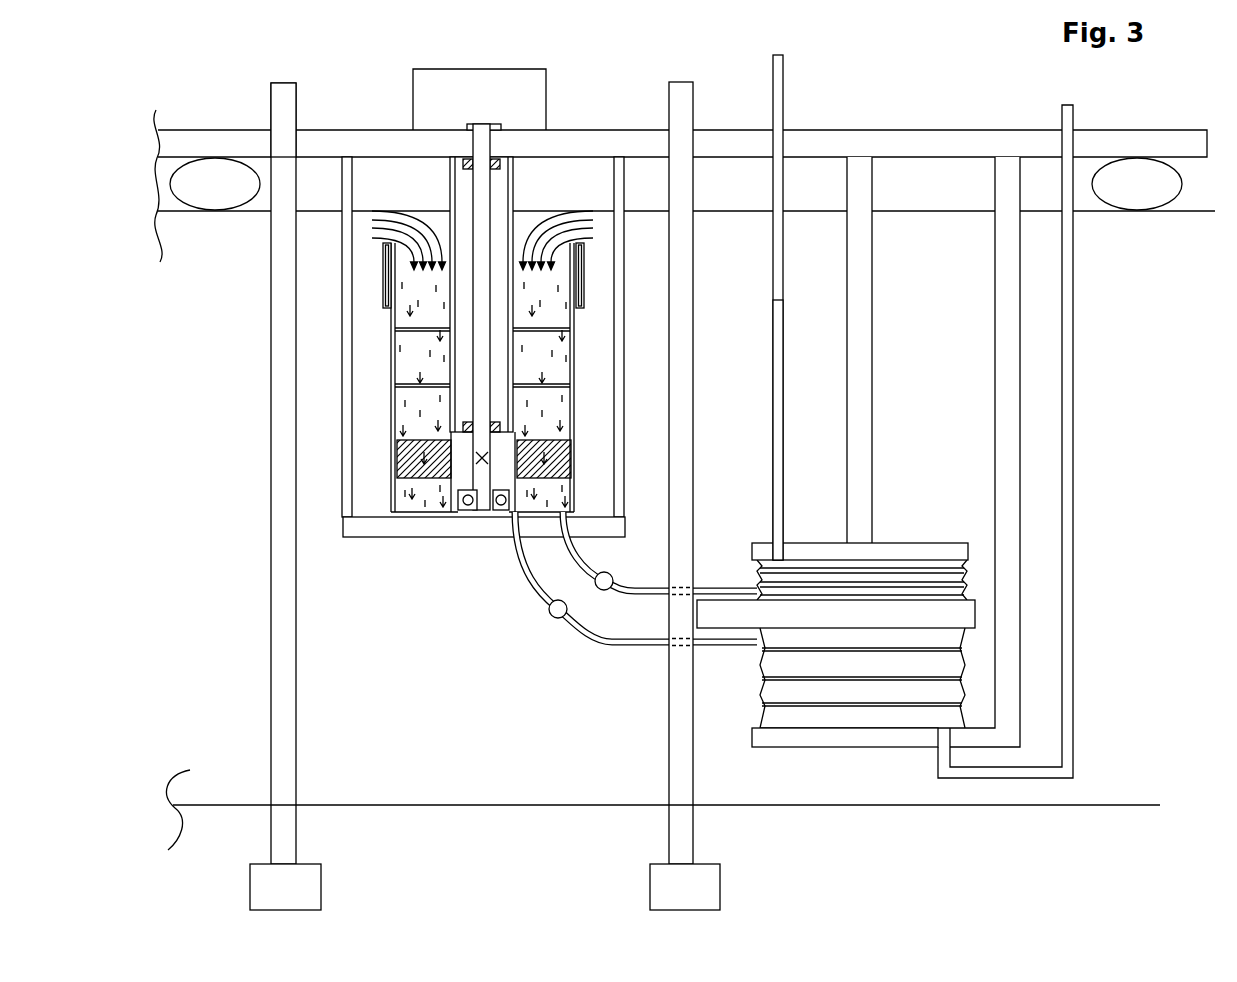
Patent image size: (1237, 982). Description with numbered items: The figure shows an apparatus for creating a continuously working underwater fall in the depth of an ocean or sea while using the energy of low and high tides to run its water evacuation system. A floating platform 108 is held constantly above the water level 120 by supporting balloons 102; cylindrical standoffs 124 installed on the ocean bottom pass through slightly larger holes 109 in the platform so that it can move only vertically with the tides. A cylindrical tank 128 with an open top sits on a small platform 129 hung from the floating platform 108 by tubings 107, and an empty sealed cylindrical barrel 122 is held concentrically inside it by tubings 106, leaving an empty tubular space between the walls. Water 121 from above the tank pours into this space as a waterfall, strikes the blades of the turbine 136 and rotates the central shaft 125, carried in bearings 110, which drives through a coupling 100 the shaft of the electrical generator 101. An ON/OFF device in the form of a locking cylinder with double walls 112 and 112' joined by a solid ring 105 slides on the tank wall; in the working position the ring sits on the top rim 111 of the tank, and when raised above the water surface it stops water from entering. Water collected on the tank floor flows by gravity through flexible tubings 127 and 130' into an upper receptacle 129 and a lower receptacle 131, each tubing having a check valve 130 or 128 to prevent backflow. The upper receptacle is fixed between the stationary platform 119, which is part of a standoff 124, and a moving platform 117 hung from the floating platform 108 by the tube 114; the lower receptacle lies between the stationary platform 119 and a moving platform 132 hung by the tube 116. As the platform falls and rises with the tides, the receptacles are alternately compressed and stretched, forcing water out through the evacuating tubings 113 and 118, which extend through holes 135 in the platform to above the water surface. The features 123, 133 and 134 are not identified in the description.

The coupling 100 is at (468, 124).
The electrical generator 101 is at (547, 106).
The supporting balloons 102 is at (1137, 196).
The solid ring 105 is at (383, 255).
The tubings 106 is at (393, 378).
The tubings 107 is at (342, 396).
The floating platform 108 is at (900, 130).
The holes 109 is at (297, 121).
The bearings 110 is at (460, 512).
The top rim of the tank 111 is at (580, 255).
The locking cylinder 112 is at (617, 377).
The double wall 112' is at (349, 377).
The evacuating tubing 113 is at (773, 452).
The tube 114 is at (873, 392).
The tube 116 is at (995, 440).
The moving platform 117 is at (905, 543).
The evacuating tubing 118 is at (1062, 490).
The stationary platform 119 is at (975, 614).
The water level 120 is at (1188, 212).
The water 121 is at (432, 217).
The sealed cylindrical barrel 122 is at (516, 169).
The inlet flow 123 is at (523, 232).
The cylindrical standoffs 124 is at (271, 650).
The central shaft 125 is at (486, 512).
The flexible tubing 127 is at (645, 596).
The cylindrical tank 128 is at (549, 611).
The upper receptacle 129 is at (370, 538).
The upper check valve 130 is at (627, 566).
The flexible tubing 130' is at (636, 597).
The lower receptacle 131 is at (758, 710).
The moving platform 132 is at (818, 748).
The sea bed 133 is at (1115, 805).
The foot 134 is at (321, 885).
The holes 135 is at (784, 129).
The turbine 136 is at (397, 460).